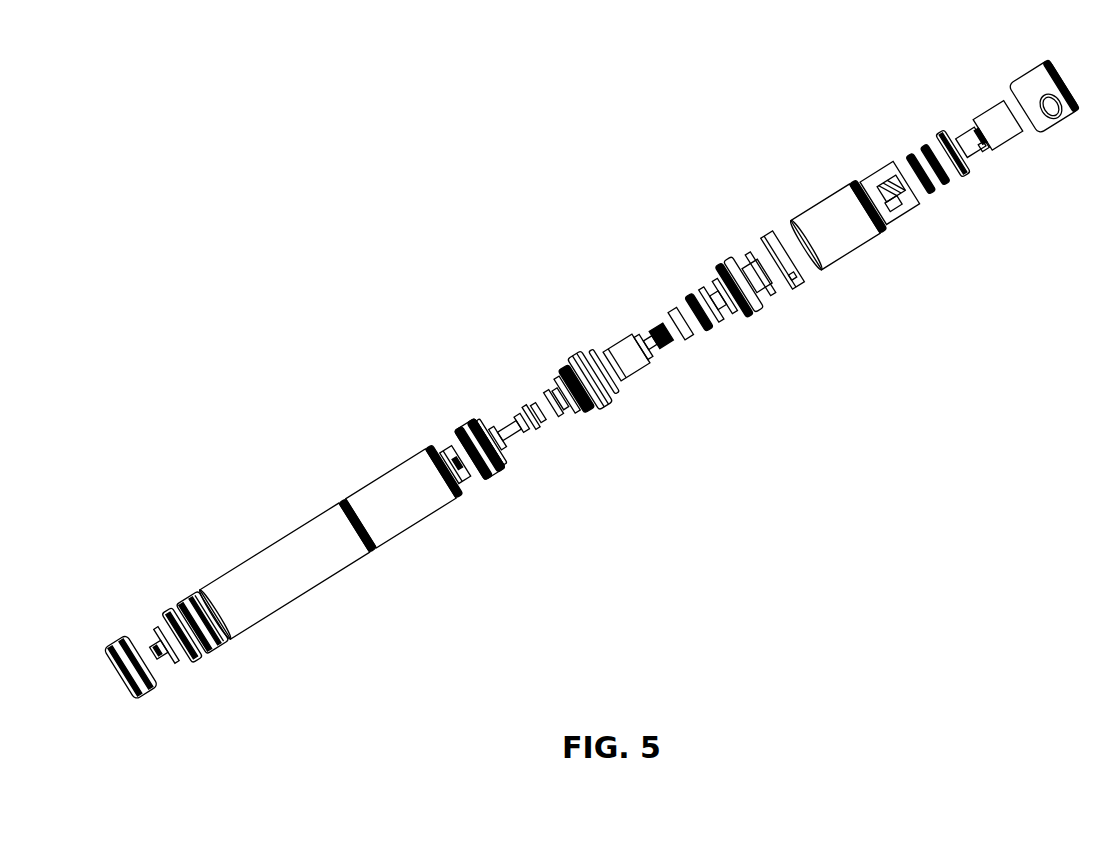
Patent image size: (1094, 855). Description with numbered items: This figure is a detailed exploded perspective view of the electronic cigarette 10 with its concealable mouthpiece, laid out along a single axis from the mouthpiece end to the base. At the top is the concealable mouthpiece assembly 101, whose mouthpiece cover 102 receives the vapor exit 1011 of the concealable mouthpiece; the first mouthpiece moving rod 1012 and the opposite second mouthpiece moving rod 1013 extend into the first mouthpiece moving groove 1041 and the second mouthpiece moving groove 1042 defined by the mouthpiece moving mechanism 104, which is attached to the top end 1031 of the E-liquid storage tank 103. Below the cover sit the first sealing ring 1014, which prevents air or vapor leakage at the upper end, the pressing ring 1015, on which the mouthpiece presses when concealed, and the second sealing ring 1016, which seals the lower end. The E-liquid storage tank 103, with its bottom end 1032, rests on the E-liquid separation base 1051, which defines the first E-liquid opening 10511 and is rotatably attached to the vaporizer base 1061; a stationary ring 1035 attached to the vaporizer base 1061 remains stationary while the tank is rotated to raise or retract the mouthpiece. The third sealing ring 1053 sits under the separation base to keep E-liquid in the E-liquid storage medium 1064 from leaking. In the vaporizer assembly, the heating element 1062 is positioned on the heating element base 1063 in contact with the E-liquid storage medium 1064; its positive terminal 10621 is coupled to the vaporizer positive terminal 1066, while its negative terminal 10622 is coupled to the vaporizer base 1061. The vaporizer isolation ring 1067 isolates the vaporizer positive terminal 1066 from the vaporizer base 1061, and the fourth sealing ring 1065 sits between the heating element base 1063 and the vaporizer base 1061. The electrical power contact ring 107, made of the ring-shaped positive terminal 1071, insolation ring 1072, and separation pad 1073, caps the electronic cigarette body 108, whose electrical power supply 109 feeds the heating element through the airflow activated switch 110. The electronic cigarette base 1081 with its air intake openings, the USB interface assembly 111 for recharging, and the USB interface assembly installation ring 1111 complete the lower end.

The electronic cigarette 10 is at (170, 124).
The concealable mouthpiece assembly 101 is at (995, 117).
The vapor exit 1011 is at (963, 130).
The first mouthpiece moving rod 1012 is at (973, 120).
The second mouthpiece moving rod 1013 is at (987, 150).
The first sealing ring 1014 is at (957, 160).
The pressing ring 1015 is at (925, 150).
The second sealing ring 1016 is at (930, 183).
The mouthpiece cover 102 is at (1033, 107).
The E-liquid storage tank 103 is at (825, 208).
The top end 1031 is at (880, 215).
The bottom end 1032 is at (795, 235).
The stationary ring 1035 is at (793, 280).
The mouthpiece moving mechanism 104 is at (900, 160).
The first mouthpiece moving groove 1041 is at (893, 177).
The second mouthpiece moving groove 1042 is at (893, 205).
The E-liquid separation base 1051 is at (753, 310).
The first E-liquid opening 10511 is at (743, 262).
The third sealing ring 1053 is at (692, 298).
The vaporizer base 1061 is at (590, 410).
The heating element 1062 is at (653, 326).
The positive terminal 10621 is at (638, 337).
The negative terminal 10622 is at (648, 343).
The heating element base 1063 is at (616, 358).
The E-liquid storage medium 1064 is at (683, 340).
The fourth sealing ring 1065 is at (620, 387).
The vaporizer positive terminal 1066 is at (545, 418).
The vaporizer isolation ring 1067 is at (555, 395).
The electrical power contact ring 107 is at (465, 440).
The positive terminal 1071 is at (512, 432).
The insolation ring 1072 is at (505, 460).
The separation pad 1073 is at (445, 455).
The electronic cigarette body 108 is at (275, 548).
The electronic cigarette base 1081 is at (131, 643).
The electrical power supply 109 is at (385, 487).
The airflow activated switch 110 is at (190, 607).
The USB interface assembly 111 is at (176, 652).
The USB interface assembly installation ring 1111 is at (205, 652).